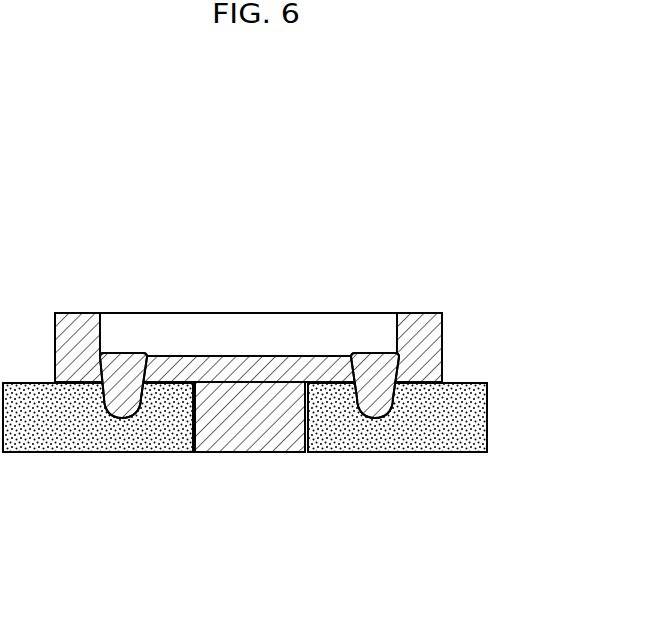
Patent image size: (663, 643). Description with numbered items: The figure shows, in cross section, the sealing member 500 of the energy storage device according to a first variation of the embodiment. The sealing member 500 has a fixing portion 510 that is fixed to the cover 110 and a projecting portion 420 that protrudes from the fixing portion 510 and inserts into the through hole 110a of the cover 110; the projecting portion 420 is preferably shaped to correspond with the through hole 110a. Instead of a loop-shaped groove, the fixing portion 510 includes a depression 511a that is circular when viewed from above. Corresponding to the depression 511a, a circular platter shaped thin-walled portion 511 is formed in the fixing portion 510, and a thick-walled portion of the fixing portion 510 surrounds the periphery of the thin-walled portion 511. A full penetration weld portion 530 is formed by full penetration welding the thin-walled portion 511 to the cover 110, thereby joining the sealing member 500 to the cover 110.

The sealing member 500 is at (473, 277).
The fixing portion 510 is at (430, 343).
The thin-walled portion 511 is at (160, 357).
The depression 511a is at (254, 327).
The full penetration weld portion 530 is at (123, 418).
The projecting portion 420 is at (225, 452).
The cover 110 is at (458, 442).
The through hole 110a is at (307, 452).